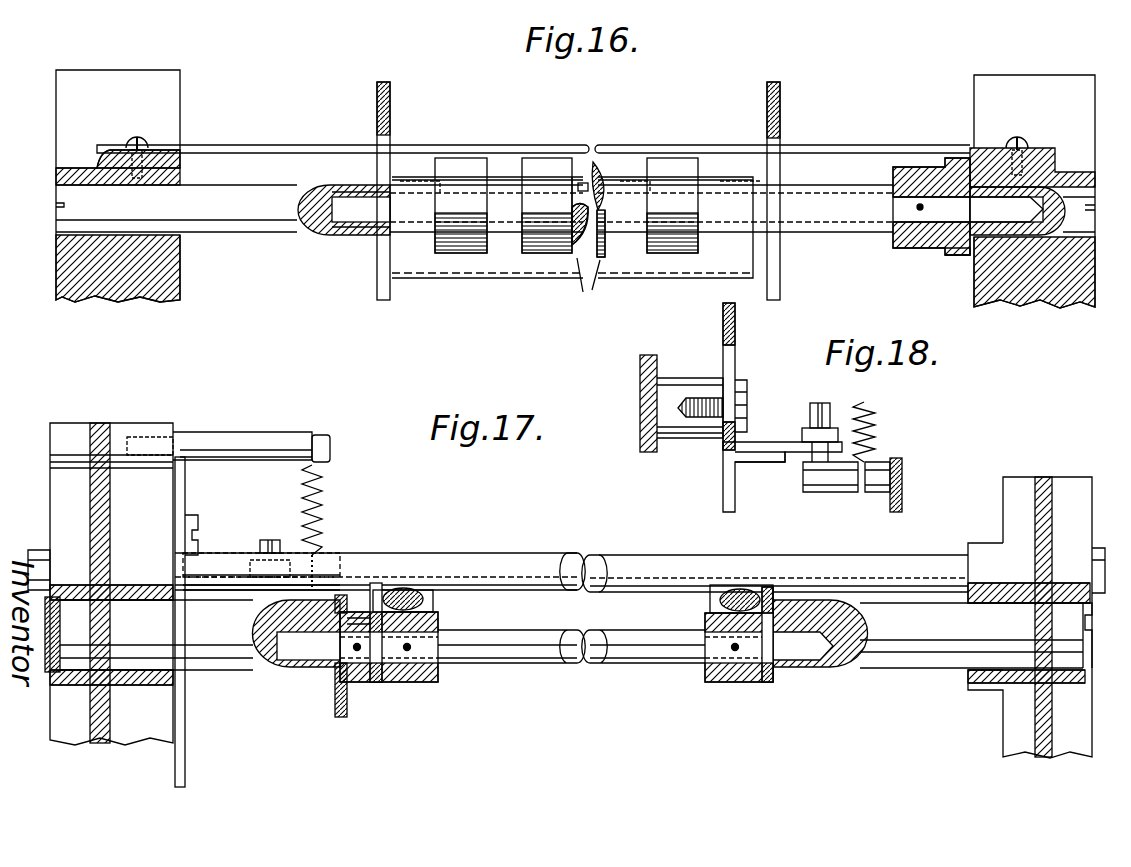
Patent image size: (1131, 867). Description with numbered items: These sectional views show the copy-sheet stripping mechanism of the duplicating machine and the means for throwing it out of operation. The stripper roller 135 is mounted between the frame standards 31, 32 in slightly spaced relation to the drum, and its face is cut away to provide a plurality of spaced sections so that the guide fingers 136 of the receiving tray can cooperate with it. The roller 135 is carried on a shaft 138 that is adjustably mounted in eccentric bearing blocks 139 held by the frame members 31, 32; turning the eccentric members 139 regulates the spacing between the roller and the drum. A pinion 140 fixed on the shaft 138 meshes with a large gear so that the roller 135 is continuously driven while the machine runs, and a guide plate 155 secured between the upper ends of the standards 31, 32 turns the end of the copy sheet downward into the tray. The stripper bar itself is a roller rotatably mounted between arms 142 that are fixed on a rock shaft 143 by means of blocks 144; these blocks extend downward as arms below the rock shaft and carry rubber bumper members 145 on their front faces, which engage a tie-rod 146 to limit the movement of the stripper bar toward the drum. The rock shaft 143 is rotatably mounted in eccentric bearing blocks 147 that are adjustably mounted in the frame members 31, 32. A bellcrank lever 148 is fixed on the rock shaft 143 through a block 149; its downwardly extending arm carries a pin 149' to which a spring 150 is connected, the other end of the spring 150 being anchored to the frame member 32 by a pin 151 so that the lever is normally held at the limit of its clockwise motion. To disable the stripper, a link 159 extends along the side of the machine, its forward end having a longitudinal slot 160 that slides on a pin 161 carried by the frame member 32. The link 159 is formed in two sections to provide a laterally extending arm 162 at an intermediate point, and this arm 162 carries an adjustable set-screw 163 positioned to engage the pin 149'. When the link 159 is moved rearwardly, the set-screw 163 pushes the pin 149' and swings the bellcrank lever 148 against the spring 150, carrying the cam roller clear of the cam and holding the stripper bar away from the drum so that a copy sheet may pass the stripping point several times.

In FIG. 16, the standard 31 is at (1015, 85).
In FIG. 17, the standard 31 is at (1018, 483).
In FIG. 16, the standard 32 is at (130, 85).
In FIG. 17, the standard 32 is at (62, 480).
In FIG. 18, the standard 32 is at (640, 378).
In FIG. 16, the roller 135 is at (665, 248).
In FIG. 16, the guide fingers 136 is at (515, 262).
In FIG. 16, the shaft 138 is at (880, 218).
In FIG. 16, the eccentric bearing blocks 139 is at (284, 220).
In FIG. 16, the pinion 140 is at (950, 240).
In FIG. 16, the arms 142 is at (377, 100).
In FIG. 17, the arms 142 is at (377, 684).
In FIG. 17, the rock shaft 143 is at (617, 655).
In FIG. 17, the blocks 144 is at (438, 670).
In FIG. 17, the bumper members 145 is at (428, 600).
In FIG. 17, the tie-rod 146 is at (596, 558).
In FIG. 17, the eccentric bearing blocks 147 is at (235, 660).
In FIG. 17, the bellcrank lever 148 is at (335, 703).
In FIG. 18, the bellcrank lever 148 is at (902, 480).
In FIG. 17, the block 149 is at (371, 679).
In FIG. 17, the pin 149' is at (261, 605).
In FIG. 18, the pin 149' is at (846, 495).
In FIG. 17, the spring 150 is at (305, 470).
In FIG. 18, the spring 150 is at (870, 412).
In FIG. 17, the pin 151 is at (250, 440).
In FIG. 16, the guide plate 155 is at (598, 146).
In FIG. 17, the link 159 is at (185, 718).
In FIG. 18, the link 159 is at (736, 312).
In FIG. 18, the slot 160 is at (730, 355).
In FIG. 18, the pin 161 is at (740, 395).
In FIG. 17, the laterally extending arm 162 is at (213, 575).
In FIG. 18, the laterally extending arm 162 is at (772, 448).
In FIG. 17, the set-screw 163 is at (265, 540).
In FIG. 18, the set-screw 163 is at (815, 410).